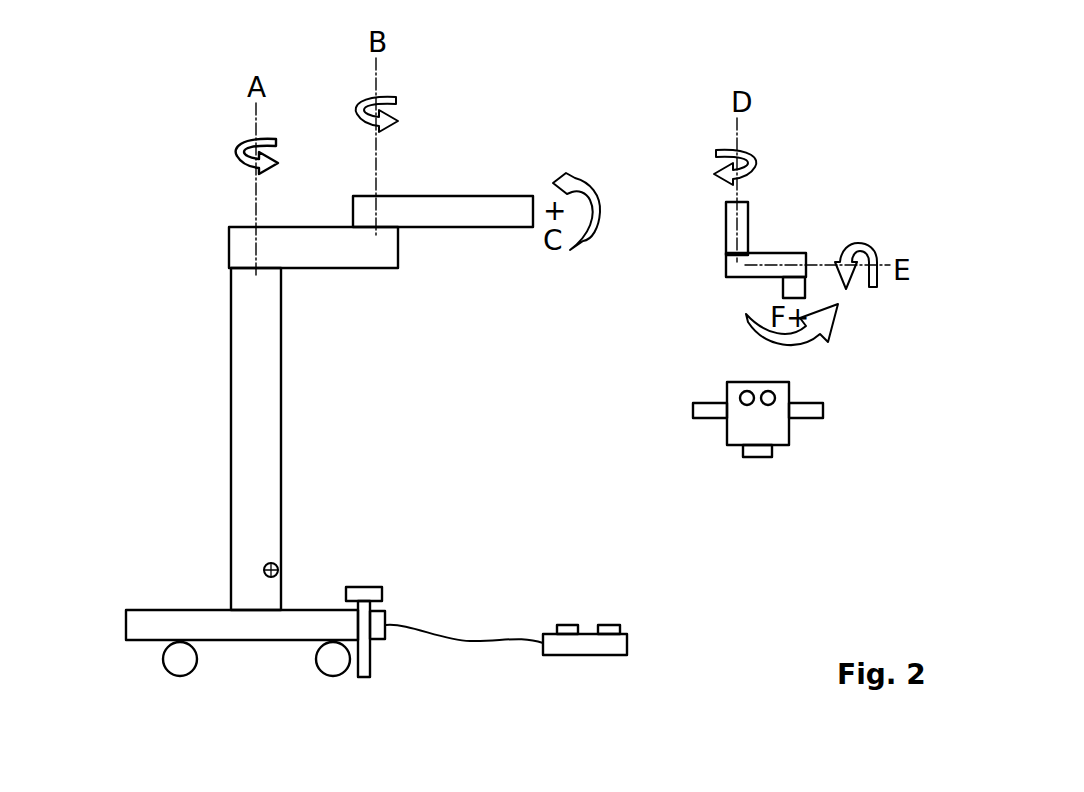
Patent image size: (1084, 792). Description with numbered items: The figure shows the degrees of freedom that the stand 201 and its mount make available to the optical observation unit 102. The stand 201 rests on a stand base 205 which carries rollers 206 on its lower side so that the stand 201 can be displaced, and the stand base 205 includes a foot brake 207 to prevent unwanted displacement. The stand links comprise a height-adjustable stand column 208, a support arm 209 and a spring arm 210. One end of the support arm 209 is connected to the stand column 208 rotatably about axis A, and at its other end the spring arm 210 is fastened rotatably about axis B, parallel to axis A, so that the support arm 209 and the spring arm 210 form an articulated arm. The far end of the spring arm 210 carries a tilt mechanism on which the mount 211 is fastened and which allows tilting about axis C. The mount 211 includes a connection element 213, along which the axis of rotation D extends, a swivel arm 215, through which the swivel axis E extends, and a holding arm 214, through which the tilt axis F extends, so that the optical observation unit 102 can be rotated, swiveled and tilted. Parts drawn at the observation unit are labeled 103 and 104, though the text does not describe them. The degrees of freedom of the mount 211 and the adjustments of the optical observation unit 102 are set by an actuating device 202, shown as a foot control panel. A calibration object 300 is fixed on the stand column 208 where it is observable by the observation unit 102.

The stand 201 is at (188, 292).
The actuating device 202 is at (588, 632).
The stand base 205 is at (160, 610).
The rollers 206 is at (162, 657).
The foot brake 207 is at (362, 587).
The stand column 208 is at (230, 437).
The support arm 209 is at (361, 270).
The spring arm 210 is at (457, 194).
The mount for the optical observation unit 211 is at (842, 197).
The connection element 213 is at (726, 230).
The holding arm 214 is at (783, 287).
The swivel arm 215 is at (784, 253).
The calibration object 300 is at (273, 563).
The optical observation unit 102 is at (789, 430).
The probe connector 103 is at (757, 457).
The probe markers 104 is at (740, 397).